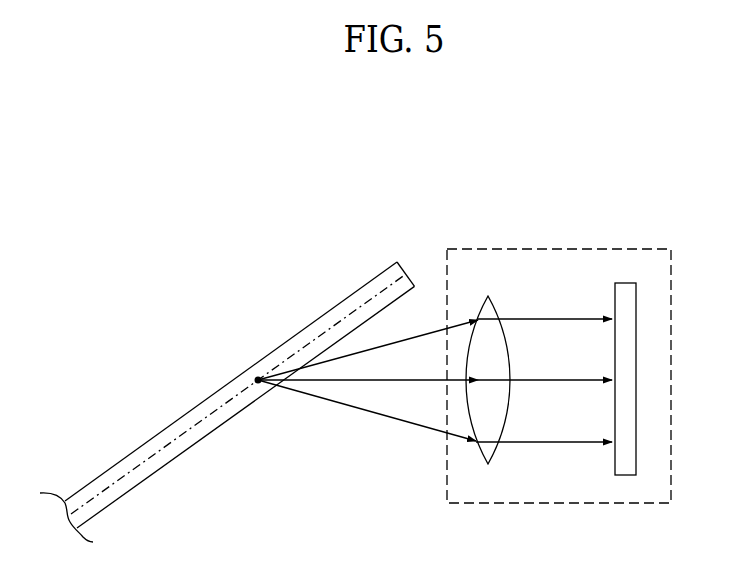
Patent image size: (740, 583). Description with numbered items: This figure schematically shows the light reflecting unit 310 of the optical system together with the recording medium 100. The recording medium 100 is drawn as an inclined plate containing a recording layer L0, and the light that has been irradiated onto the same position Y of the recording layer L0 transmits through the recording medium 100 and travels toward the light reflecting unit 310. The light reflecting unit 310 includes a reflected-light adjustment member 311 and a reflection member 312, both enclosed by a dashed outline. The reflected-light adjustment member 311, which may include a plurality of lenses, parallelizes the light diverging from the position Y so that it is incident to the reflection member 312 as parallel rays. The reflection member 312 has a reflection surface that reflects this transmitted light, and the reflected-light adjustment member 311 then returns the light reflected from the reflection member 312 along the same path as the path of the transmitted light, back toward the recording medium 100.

The recording medium 100 is at (366, 290).
The light reflecting unit 310 is at (550, 242).
The reflected-light adjustment member 311 is at (489, 464).
The reflection member 312 is at (628, 476).
The position Y is at (255, 377).
The recording layer L0 is at (423, 252).